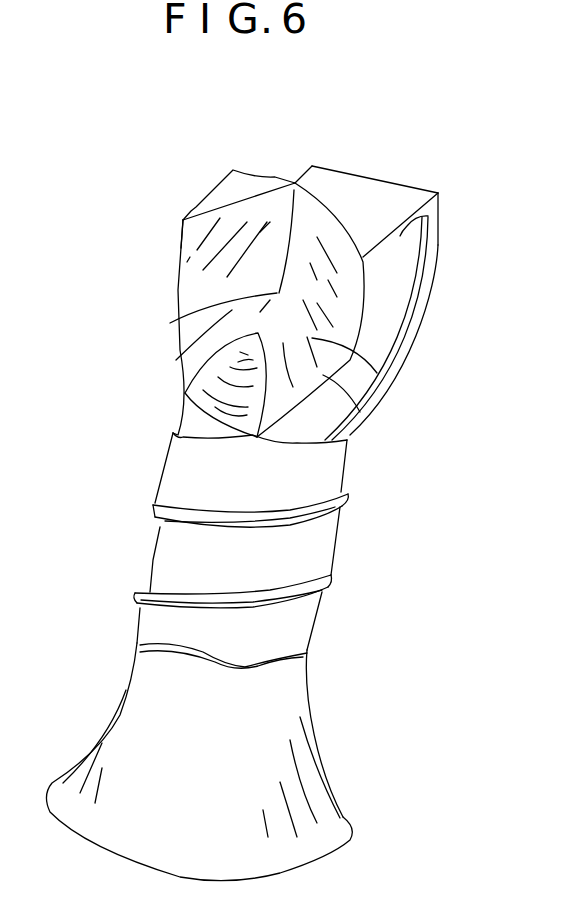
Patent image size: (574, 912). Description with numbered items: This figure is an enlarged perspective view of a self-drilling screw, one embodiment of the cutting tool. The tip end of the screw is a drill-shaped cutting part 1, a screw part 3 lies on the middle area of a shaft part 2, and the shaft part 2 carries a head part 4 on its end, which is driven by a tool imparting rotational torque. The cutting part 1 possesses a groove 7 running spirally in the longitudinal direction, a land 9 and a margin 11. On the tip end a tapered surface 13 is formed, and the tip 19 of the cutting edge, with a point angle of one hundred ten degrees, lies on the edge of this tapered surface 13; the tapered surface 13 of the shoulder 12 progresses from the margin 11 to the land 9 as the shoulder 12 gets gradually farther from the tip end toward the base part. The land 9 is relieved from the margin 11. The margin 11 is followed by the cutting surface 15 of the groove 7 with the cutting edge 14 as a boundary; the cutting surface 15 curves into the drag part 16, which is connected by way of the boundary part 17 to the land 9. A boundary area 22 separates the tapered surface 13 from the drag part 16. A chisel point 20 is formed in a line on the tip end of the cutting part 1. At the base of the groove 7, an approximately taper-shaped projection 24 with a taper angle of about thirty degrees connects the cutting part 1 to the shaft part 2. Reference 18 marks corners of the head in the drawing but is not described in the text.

The cutting part 1 is at (178, 283).
The shaft part 2 is at (152, 557).
The screw part 3 is at (332, 580).
The head part 4 is at (345, 818).
The groove 7 is at (172, 323).
The land 9 is at (380, 325).
The margin 11 is at (428, 300).
The shoulder 12 is at (432, 228).
The tapered surface 13 is at (376, 213).
The cutting edge 14 is at (178, 253).
The cutting surface 15 is at (176, 360).
The drag part 16 is at (377, 373).
The boundary part 17 is at (360, 412).
The corner 18 is at (183, 220).
The tip 19 is at (215, 203).
The chisel point 20 is at (292, 172).
The boundary area 22 is at (255, 172).
The projection 24 is at (185, 393).